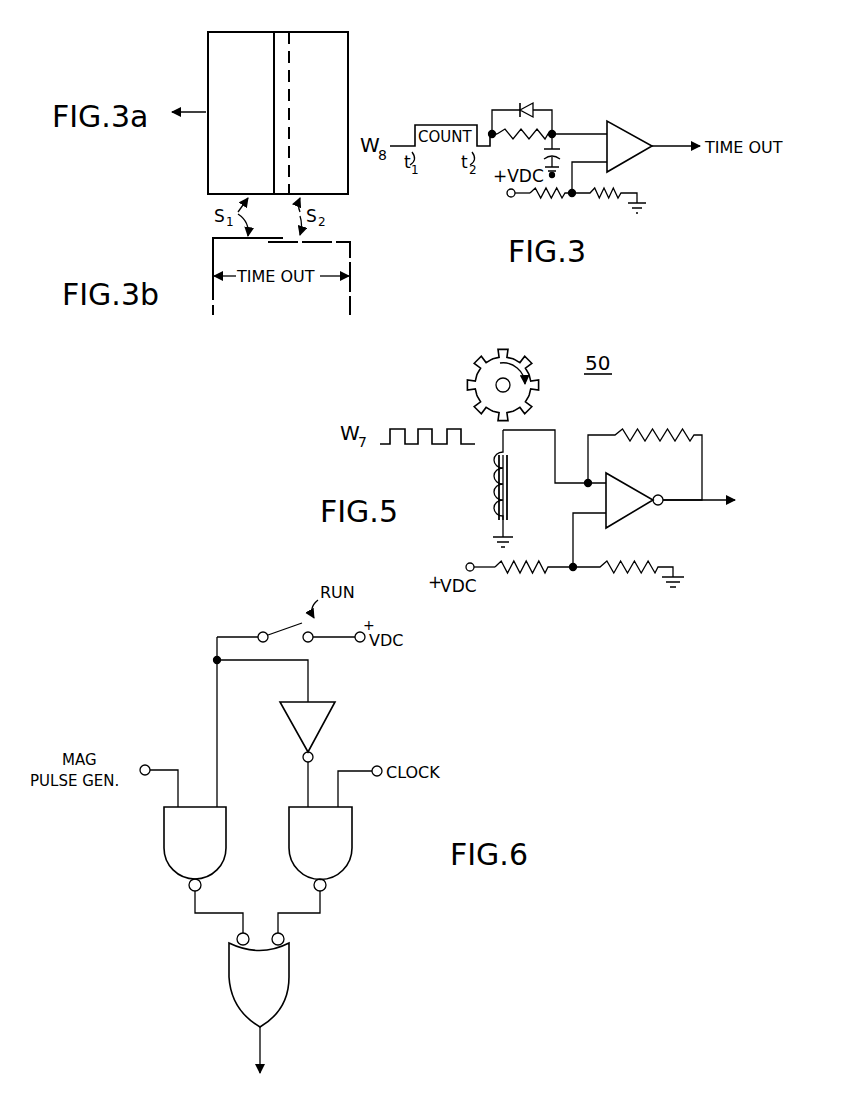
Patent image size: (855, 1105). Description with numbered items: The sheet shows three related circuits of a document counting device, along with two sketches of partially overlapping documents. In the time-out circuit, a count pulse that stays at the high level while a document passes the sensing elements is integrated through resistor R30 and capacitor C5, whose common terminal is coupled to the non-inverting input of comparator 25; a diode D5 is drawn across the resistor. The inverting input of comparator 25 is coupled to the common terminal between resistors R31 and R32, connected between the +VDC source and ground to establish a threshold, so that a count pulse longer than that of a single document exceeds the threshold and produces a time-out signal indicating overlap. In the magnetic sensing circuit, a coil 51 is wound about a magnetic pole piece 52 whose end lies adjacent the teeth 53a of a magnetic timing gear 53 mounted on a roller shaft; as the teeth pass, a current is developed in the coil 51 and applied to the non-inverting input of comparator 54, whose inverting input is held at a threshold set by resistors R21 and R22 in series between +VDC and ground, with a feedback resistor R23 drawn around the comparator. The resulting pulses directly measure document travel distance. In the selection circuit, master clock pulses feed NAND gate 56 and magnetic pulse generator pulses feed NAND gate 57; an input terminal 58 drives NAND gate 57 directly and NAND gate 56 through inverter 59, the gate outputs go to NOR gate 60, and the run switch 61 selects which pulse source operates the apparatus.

In FIG. 3, the comparator 25 is at (620, 121).
In FIG. 3, the diode D5 is at (540, 101).
In FIG. 3, the resistor R30 is at (532, 148).
In FIG. 3, the capacitor C5 is at (566, 155).
In FIG. 3, the resistor R31 is at (538, 203).
In FIG. 3, the resistor R32 is at (614, 203).
In FIG. 5, the coil 51 is at (493, 488).
In FIG. 5, the magnetic pole piece 52 is at (511, 498).
In FIG. 5, the magnetic timing gear 53 is at (542, 364).
In FIG. 5, the teeth 53a is at (470, 375).
In FIG. 5, the comparator 54 is at (656, 508).
In FIG. 5, the resistor R21 is at (507, 573).
In FIG. 5, the resistor R22 is at (599, 573).
In FIG. 5, the feedback resistor R23 is at (650, 430).
In FIG. 6, the NAND gate 56 is at (352, 855).
In FIG. 6, the NAND gate 57 is at (164, 845).
In FIG. 6, the input terminal 58 is at (215, 658).
In FIG. 6, the inverter 59 is at (318, 743).
In FIG. 6, the NOR gate 60 is at (287, 992).
In FIG. 6, the run switch 61 is at (276, 630).